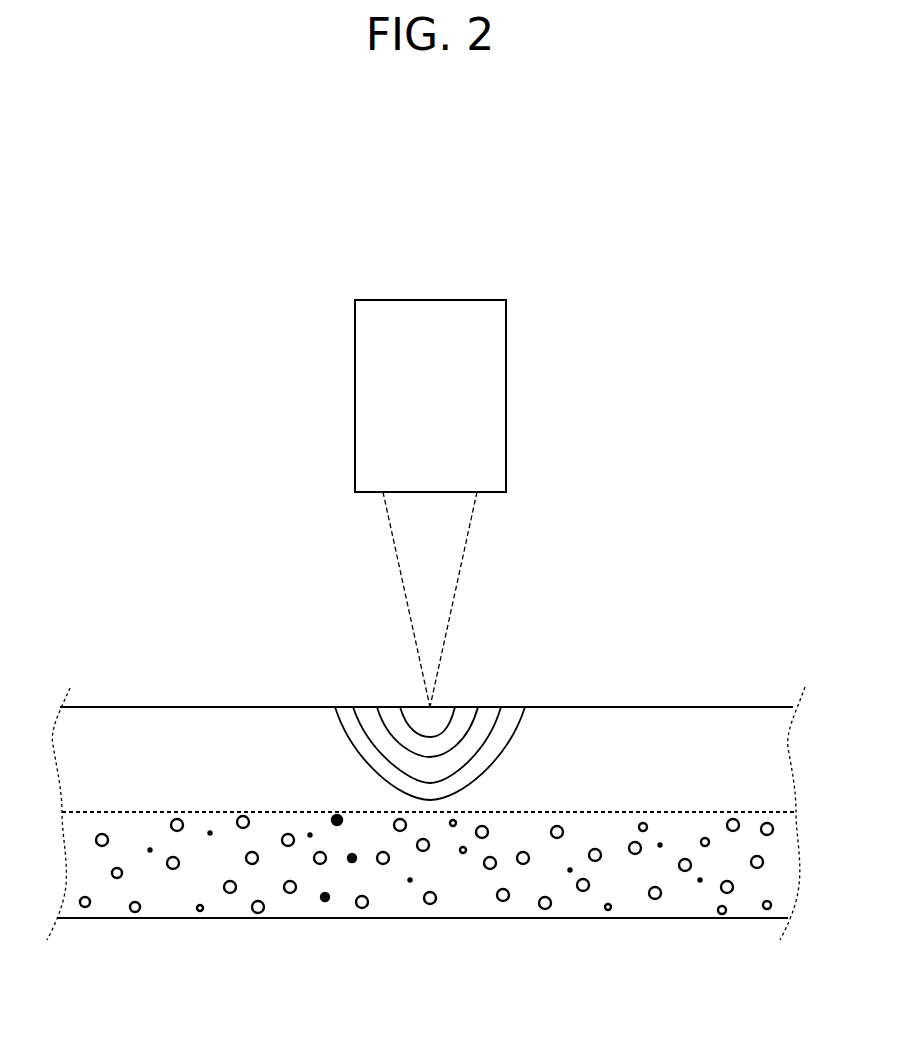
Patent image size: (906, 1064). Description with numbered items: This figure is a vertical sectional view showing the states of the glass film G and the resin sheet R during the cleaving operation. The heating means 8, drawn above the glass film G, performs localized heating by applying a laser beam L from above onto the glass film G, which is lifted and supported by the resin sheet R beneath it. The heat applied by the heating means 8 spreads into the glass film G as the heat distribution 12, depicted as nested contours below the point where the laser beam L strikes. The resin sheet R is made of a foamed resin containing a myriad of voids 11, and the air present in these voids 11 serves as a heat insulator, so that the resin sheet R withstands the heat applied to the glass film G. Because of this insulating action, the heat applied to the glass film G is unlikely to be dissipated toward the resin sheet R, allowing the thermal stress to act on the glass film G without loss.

The heating means 8 is at (490, 386).
The laser beam L is at (463, 549).
The glass film G is at (176, 740).
The heat distribution 12 is at (517, 742).
The resin sheet R is at (183, 903).
The voids 11 is at (489, 870).